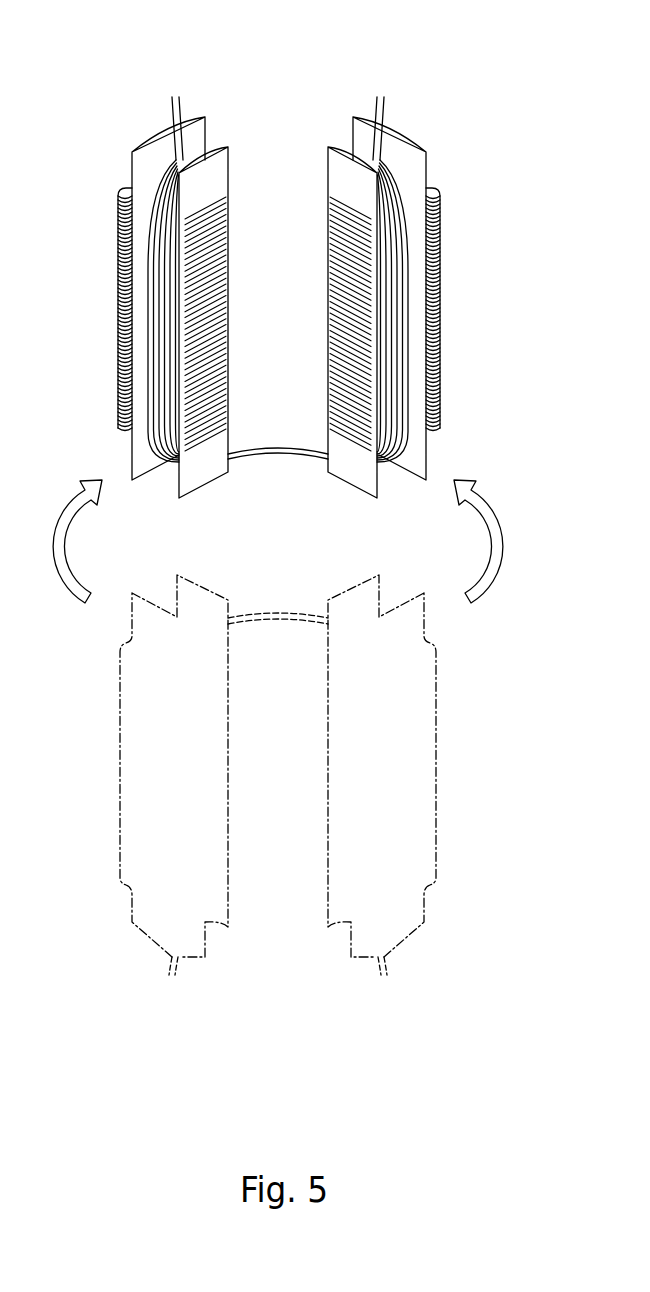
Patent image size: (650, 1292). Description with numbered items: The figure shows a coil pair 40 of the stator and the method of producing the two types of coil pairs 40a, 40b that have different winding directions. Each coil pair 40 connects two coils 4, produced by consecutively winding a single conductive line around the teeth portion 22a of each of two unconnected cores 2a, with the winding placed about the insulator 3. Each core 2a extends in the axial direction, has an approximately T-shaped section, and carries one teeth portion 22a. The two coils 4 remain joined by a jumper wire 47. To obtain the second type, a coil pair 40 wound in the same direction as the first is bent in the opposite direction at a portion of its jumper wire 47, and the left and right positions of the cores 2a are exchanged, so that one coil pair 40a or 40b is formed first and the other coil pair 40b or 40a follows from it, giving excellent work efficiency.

The coil pair 40 is at (278, 520).
The coil pair 40a is at (292, 64).
The coil pair 40b is at (228, 968).
The core 2a is at (118, 221).
The teeth portion 22a is at (213, 232).
The insulator 3 is at (186, 118).
The coil 4 is at (158, 302).
The jumper wire 47 is at (283, 458).